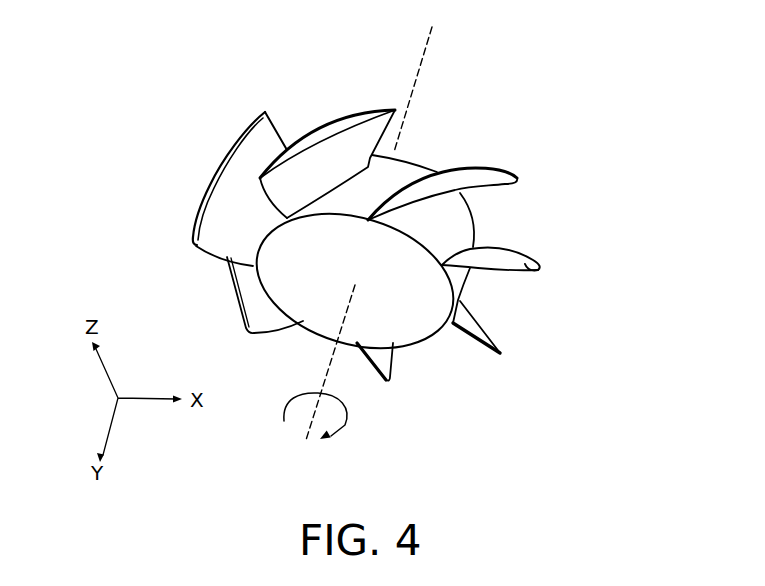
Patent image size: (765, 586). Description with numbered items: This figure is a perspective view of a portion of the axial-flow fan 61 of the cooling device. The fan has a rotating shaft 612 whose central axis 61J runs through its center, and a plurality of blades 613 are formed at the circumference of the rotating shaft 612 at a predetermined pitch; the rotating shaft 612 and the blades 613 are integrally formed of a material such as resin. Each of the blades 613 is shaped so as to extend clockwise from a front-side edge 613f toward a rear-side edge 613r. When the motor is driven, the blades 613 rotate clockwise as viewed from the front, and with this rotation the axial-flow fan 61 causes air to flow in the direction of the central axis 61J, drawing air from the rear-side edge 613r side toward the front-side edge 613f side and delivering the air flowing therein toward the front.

The axial-flow fan 61 is at (583, 63).
The central axis 61J is at (430, 43).
The rotating shaft 612 is at (425, 323).
The blades 613 is at (333, 128).
The front-side edge 613f is at (262, 197).
The rear-side edge 613r is at (393, 136).